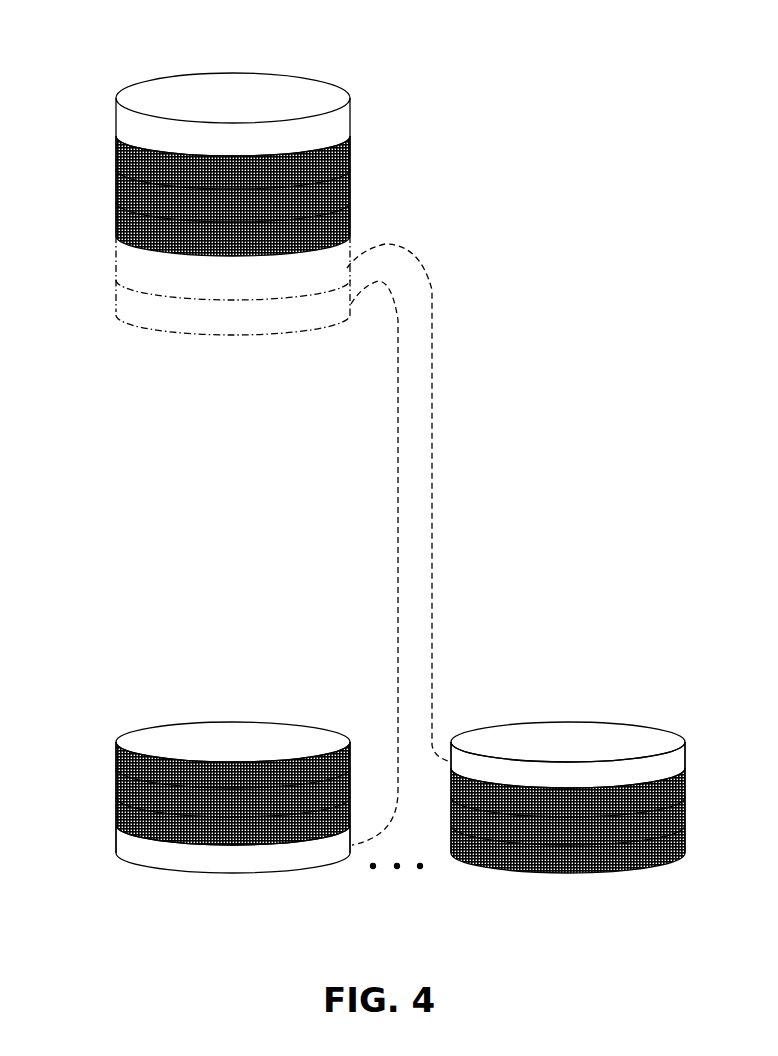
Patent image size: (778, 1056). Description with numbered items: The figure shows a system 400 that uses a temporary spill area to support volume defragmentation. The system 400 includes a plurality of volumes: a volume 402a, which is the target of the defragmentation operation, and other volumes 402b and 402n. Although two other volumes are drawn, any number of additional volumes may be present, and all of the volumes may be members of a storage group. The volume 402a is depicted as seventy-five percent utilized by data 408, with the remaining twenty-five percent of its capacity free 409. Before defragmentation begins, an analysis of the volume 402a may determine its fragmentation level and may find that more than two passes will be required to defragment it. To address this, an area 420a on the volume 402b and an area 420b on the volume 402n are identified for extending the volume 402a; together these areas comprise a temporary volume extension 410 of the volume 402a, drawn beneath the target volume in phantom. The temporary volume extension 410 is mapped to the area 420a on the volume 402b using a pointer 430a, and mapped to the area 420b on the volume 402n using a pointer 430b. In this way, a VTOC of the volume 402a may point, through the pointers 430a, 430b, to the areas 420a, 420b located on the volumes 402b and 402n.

The system 400 is at (557, 71).
The volume 402a is at (117, 95).
The other volume 402b is at (102, 742).
The other volume 402n is at (693, 742).
The data 408 is at (350, 225).
The free capacity 409 is at (350, 128).
The temporary volume extension 410 is at (117, 248).
The area 420a is at (255, 870).
The area 420b is at (590, 785).
The pointer 430a is at (400, 485).
The pointer 430b is at (490, 332).